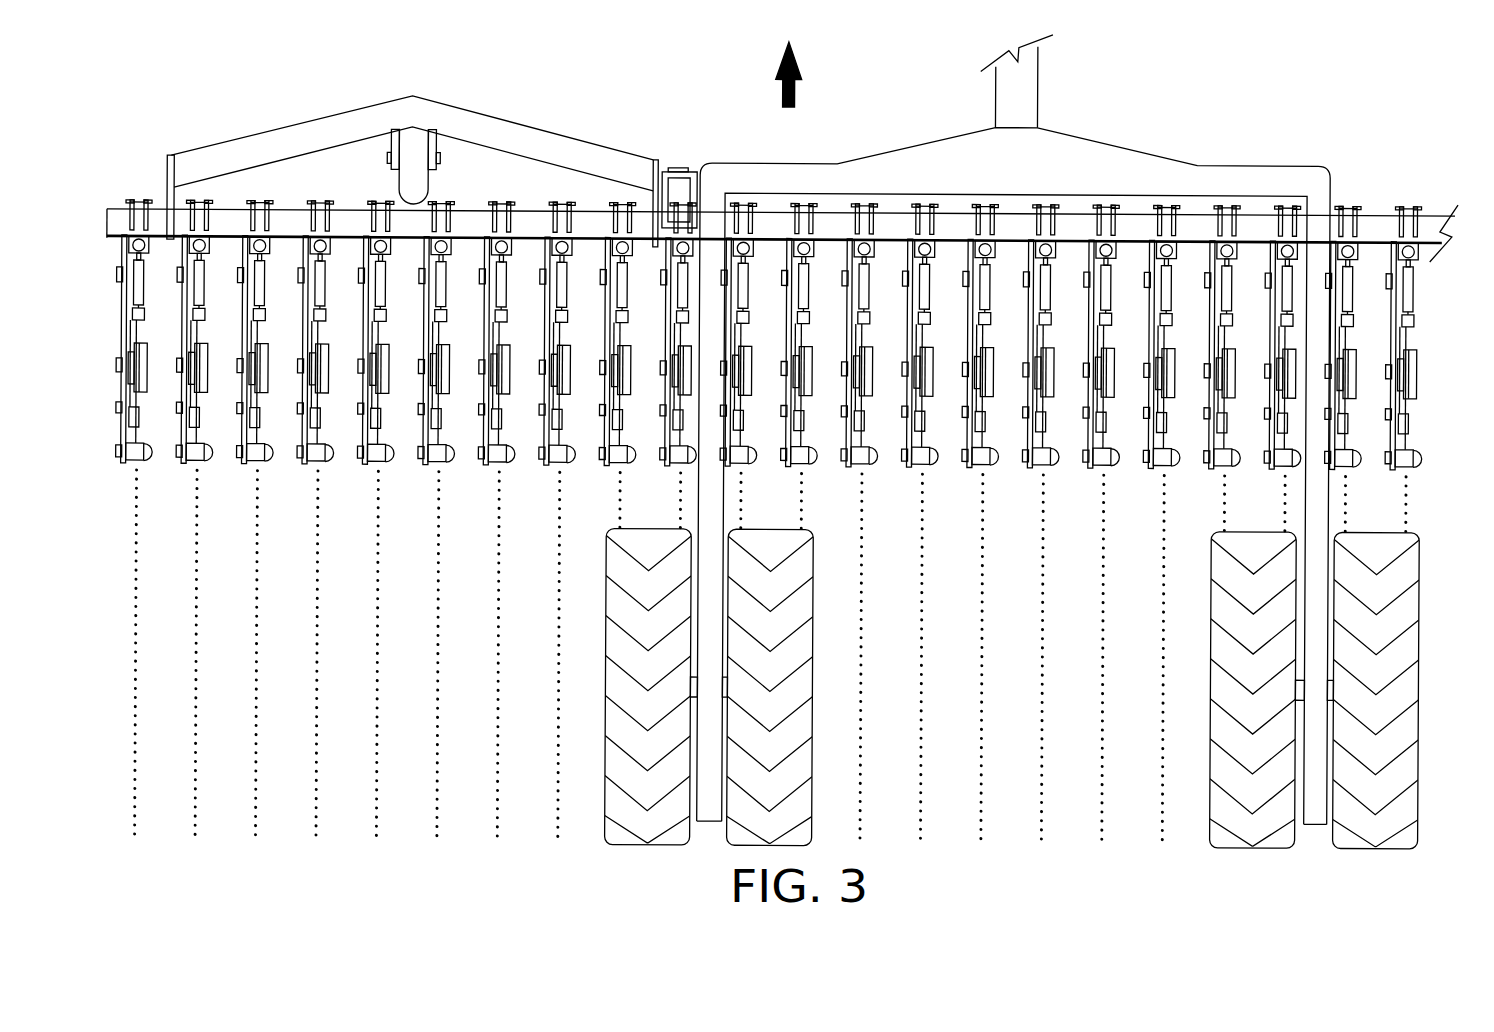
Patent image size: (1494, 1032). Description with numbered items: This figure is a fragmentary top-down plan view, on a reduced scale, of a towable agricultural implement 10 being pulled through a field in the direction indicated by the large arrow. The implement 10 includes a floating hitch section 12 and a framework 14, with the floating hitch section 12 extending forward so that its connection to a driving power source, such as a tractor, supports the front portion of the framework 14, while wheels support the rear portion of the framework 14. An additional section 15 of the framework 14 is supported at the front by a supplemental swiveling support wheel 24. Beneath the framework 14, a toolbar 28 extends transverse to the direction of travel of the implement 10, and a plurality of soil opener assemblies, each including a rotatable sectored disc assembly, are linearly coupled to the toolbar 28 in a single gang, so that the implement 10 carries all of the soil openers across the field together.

The towable agricultural implement 10 is at (1232, 120).
The floating hitch section 12 is at (1020, 92).
The framework 14 is at (740, 175).
The additional section 15 is at (288, 136).
The supplemental swiveling support wheel 24 is at (413, 183).
The toolbar 28 is at (348, 222).